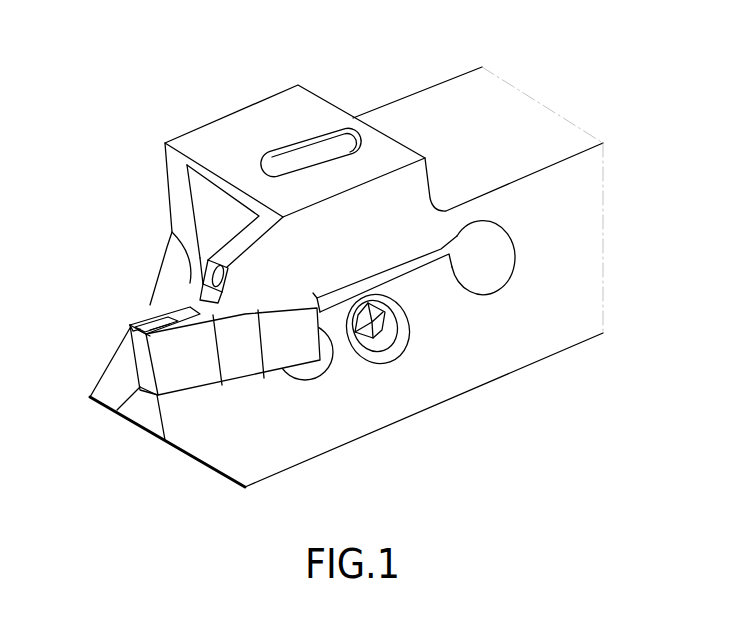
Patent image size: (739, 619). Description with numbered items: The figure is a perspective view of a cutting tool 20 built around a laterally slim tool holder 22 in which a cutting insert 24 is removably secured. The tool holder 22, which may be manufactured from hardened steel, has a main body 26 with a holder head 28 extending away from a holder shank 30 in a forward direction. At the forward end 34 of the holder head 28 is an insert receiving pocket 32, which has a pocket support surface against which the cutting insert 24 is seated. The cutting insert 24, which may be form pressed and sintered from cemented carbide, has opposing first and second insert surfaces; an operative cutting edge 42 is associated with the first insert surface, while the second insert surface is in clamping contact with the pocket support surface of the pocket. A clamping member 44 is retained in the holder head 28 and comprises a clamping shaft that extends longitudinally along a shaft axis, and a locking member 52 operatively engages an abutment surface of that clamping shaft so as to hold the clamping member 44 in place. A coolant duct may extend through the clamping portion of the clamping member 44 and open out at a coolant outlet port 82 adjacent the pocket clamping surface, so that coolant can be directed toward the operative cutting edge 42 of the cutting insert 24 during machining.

The cutting tool 20 is at (198, 108).
The tool holder 22 is at (443, 193).
The cutting insert 24 is at (182, 343).
The main body 26 is at (453, 345).
The holder head 28 is at (277, 433).
The holder shank 30 is at (557, 303).
The insert receiving pocket 32 is at (238, 352).
The forward end 34 is at (148, 418).
The operative cutting edge 42 is at (133, 330).
The clamping member 44 is at (313, 160).
The locking member 52 is at (392, 335).
The coolant outlet port 82 is at (210, 280).